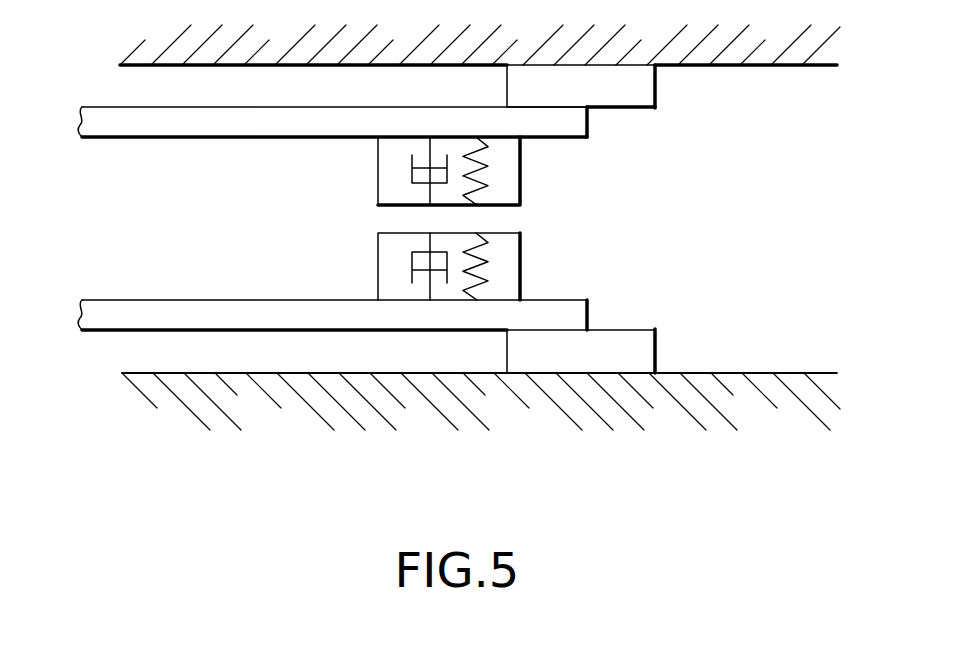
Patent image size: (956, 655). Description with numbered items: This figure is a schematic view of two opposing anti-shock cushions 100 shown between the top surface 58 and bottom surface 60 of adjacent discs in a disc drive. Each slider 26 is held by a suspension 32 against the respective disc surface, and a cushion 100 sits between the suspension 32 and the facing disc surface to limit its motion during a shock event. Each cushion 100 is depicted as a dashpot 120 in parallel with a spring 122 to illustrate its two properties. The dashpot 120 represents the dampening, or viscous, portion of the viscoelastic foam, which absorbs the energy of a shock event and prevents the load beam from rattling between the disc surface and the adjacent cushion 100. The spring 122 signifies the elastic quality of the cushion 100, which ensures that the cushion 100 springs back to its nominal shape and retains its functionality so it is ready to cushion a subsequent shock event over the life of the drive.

The slider 26 is at (645, 88).
The suspension 32 is at (118, 310).
The top surface 58 is at (802, 373).
The bottom surface 60 is at (792, 65).
The cushion 100 is at (522, 180).
The dashpot 120 is at (412, 259).
The spring 122 is at (480, 178).